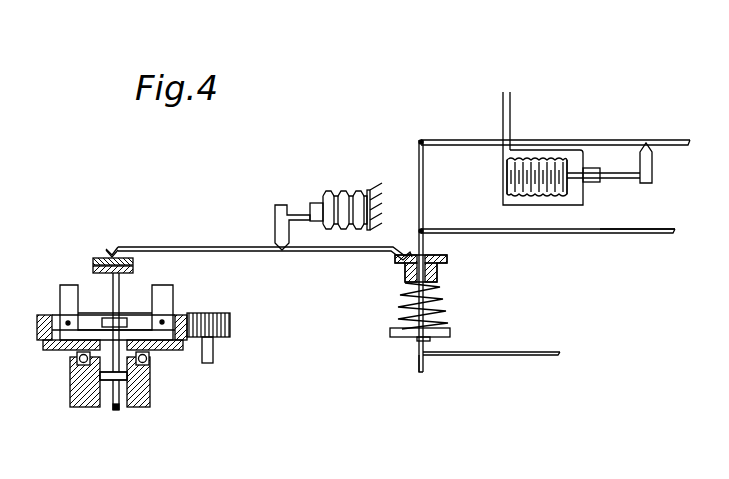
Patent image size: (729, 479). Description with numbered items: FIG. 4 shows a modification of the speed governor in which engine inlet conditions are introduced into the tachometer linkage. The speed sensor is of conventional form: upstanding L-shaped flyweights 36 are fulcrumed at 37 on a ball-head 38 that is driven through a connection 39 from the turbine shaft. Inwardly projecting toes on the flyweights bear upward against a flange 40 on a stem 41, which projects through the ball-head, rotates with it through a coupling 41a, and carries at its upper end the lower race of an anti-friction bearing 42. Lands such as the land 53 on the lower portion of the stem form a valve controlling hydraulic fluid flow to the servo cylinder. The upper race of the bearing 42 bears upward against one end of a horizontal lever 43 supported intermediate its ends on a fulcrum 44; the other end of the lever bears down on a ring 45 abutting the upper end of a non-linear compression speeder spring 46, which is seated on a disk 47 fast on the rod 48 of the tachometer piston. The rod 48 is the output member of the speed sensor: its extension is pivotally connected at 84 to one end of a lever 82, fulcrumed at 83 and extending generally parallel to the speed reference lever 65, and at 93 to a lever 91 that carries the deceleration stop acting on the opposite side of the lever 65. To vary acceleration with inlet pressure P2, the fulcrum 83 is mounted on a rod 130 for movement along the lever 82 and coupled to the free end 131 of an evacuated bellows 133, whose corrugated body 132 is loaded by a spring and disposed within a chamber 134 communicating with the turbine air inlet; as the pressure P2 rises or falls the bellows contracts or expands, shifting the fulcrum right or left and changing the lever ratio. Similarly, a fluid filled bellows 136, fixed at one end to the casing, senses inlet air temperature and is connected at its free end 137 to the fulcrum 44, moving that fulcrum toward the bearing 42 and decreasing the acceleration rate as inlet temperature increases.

The flyweights 36 is at (62, 288).
The fulcrum 37 is at (68, 322).
The ball-head 38 is at (46, 350).
The connection 39 is at (214, 358).
The flange 40 is at (110, 318).
The stem 41 is at (114, 410).
The coupling 41a is at (126, 363).
The anti-friction bearing 42 is at (108, 256).
The lever 43 is at (230, 248).
The fulcrum 44 is at (275, 223).
The ring 45 is at (449, 265).
The speeder spring 46 is at (440, 312).
The disk 47 is at (452, 332).
The rod 48 is at (417, 368).
The land 53 is at (80, 386).
The speed reference lever 65 is at (505, 352).
The lever 82 is at (680, 139).
The fulcrum 83 is at (653, 159).
The pivotal connection 84 is at (421, 140).
The lever 91 is at (624, 233).
The pivotal connection 93 is at (424, 230).
The rod 130 is at (613, 178).
The free end 131 is at (585, 196).
The bellows 132 is at (537, 198).
The evacuated bellows 133 is at (512, 200).
The chamber 134 is at (553, 150).
The fluid filled bellows 136 is at (342, 190).
The free end 137 is at (316, 205).
The inlet air pressure P2 is at (510, 92).